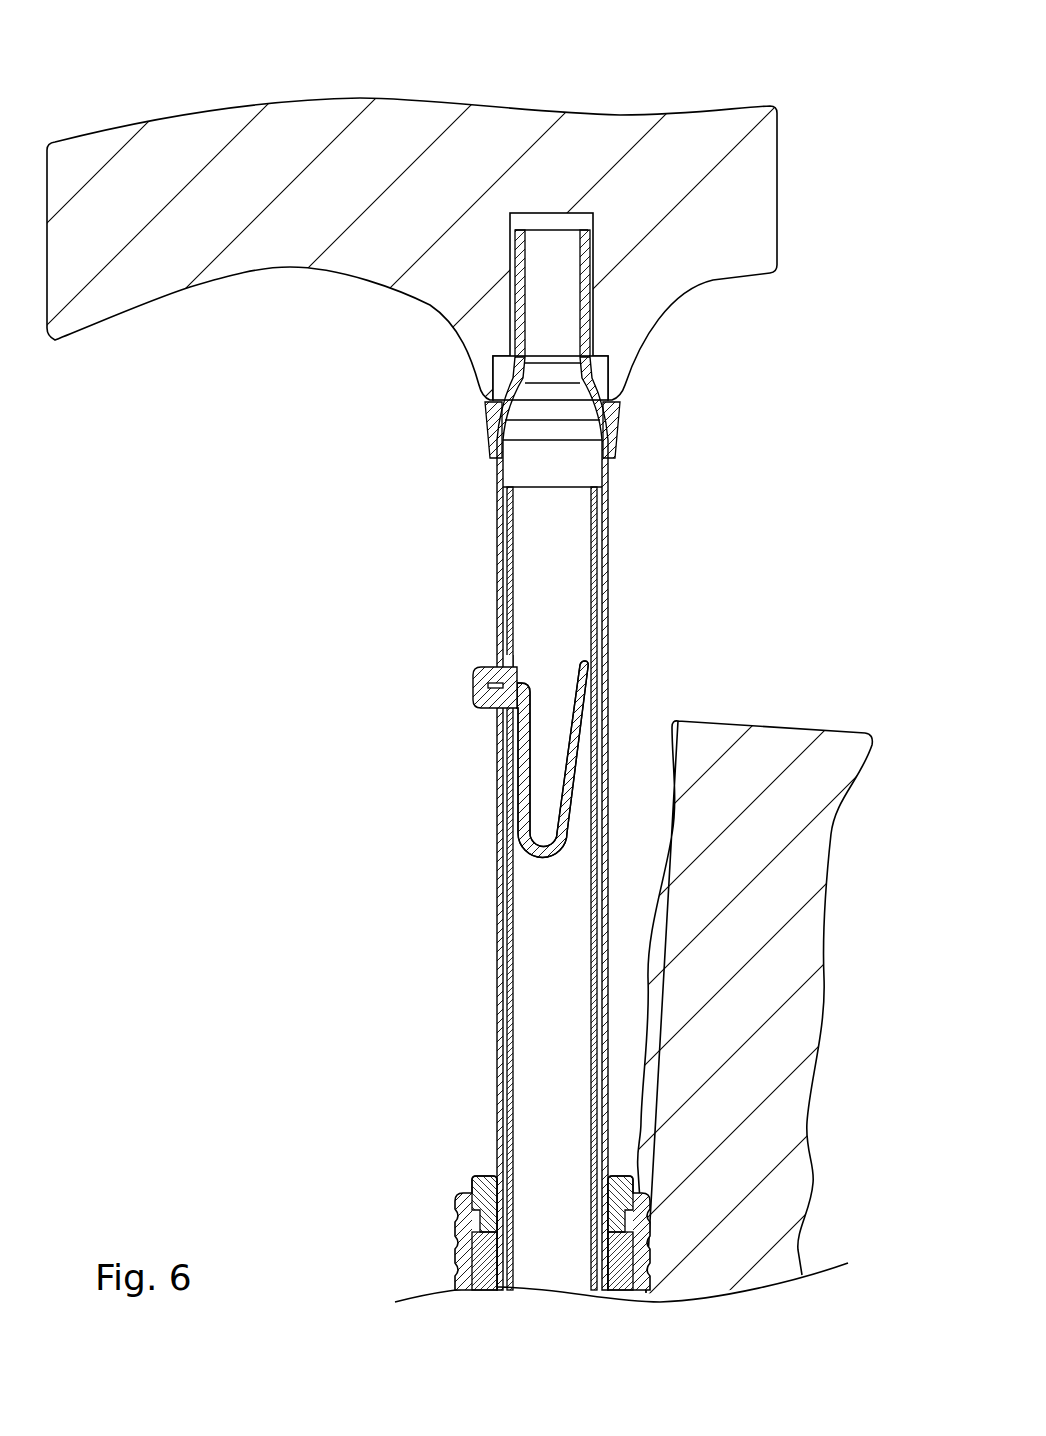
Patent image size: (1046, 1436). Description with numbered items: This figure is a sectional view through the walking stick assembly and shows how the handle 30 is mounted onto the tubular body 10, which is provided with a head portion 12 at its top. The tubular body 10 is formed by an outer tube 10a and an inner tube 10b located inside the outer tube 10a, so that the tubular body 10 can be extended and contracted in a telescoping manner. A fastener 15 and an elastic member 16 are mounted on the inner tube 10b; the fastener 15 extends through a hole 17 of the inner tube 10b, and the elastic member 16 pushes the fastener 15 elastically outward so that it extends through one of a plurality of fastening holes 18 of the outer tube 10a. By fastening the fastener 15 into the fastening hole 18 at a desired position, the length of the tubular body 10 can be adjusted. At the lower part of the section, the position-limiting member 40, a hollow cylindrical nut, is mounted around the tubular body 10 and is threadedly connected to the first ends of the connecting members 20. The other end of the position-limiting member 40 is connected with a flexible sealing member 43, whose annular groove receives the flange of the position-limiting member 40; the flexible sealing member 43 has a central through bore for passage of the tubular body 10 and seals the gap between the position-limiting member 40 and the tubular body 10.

The head portion 12 is at (173, 153).
The tubular body 10 is at (548, 751).
The outer tube 10a is at (497, 580).
The inner tube 10b is at (592, 633).
The hole 17 is at (507, 657).
The fastener 15 is at (473, 682).
The fastening hole 18 is at (497, 730).
The elastic member 16 is at (522, 825).
The flexible sealing member 43 is at (481, 1177).
The position-limiting member 40 is at (467, 1185).
The connecting member 20 is at (467, 1277).
The handle 30 is at (790, 741).